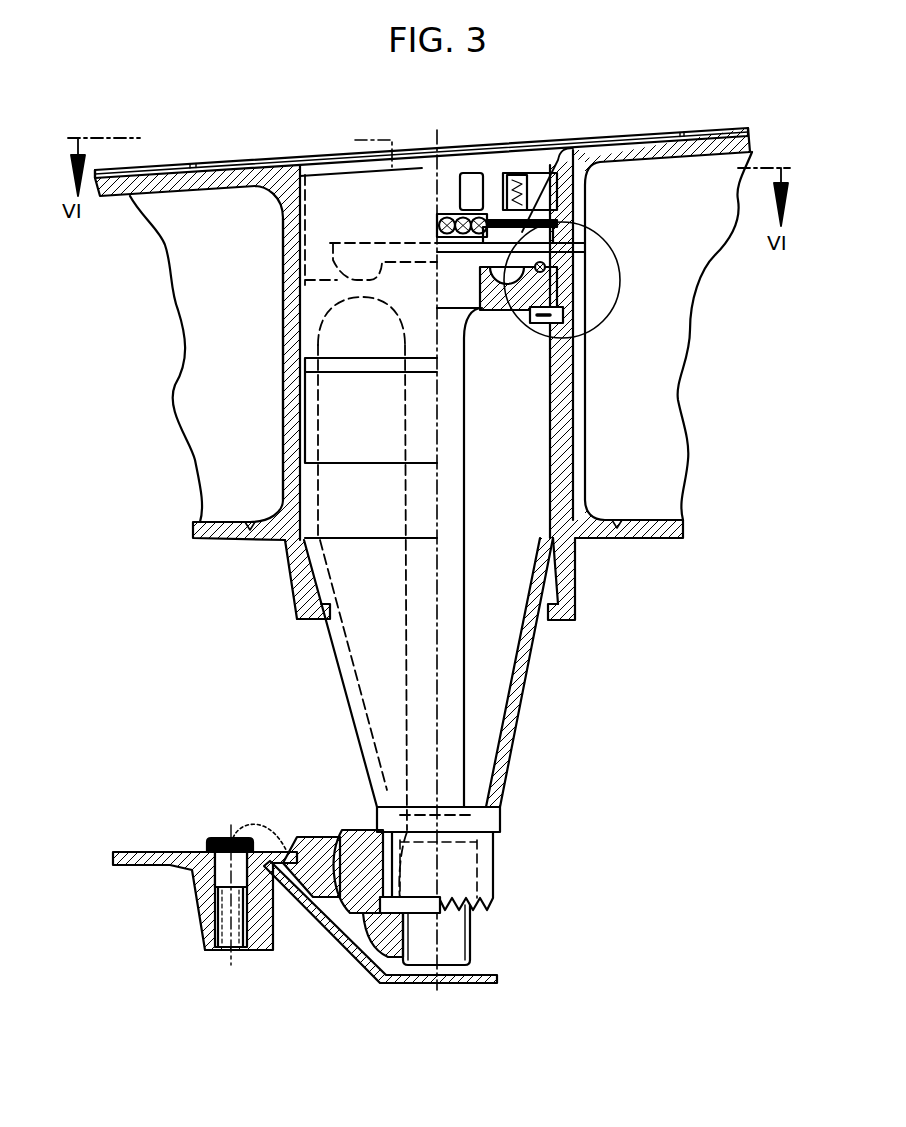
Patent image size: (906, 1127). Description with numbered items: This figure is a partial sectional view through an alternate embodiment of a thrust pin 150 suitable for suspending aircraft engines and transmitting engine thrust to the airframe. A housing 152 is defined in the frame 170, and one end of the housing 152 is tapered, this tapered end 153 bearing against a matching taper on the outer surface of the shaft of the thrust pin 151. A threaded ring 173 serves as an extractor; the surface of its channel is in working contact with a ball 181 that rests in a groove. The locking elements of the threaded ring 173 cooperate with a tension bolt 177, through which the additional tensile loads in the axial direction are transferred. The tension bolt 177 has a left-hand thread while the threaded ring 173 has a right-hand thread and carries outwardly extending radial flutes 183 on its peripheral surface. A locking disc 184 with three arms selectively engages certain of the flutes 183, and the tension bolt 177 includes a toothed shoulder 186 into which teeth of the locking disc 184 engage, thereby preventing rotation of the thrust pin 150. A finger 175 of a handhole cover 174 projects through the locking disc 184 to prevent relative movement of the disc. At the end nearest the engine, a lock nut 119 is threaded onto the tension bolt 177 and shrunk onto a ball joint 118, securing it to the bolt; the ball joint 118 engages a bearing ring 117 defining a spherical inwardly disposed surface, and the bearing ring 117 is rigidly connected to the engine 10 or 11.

The engine 10 is at (200, 902).
The engine 11 is at (202, 906).
The bearing ring 117 is at (323, 857).
The ball joint 118 is at (333, 923).
The lock nut 119 is at (374, 978).
The thrust pin 150 is at (655, 600).
The thrust pin 151 is at (542, 623).
The housing 152 is at (293, 170).
The tapered end 153 is at (323, 617).
The frame 170 is at (213, 210).
The threaded ring 173 is at (592, 144).
The handhole cover 174 is at (657, 131).
The finger 175 is at (558, 142).
The tension bolt 177 is at (450, 655).
The ball 181 is at (537, 316).
The radial flutes 183 is at (527, 187).
The locking disc 184 is at (503, 223).
The toothed shoulder 186 is at (470, 193).